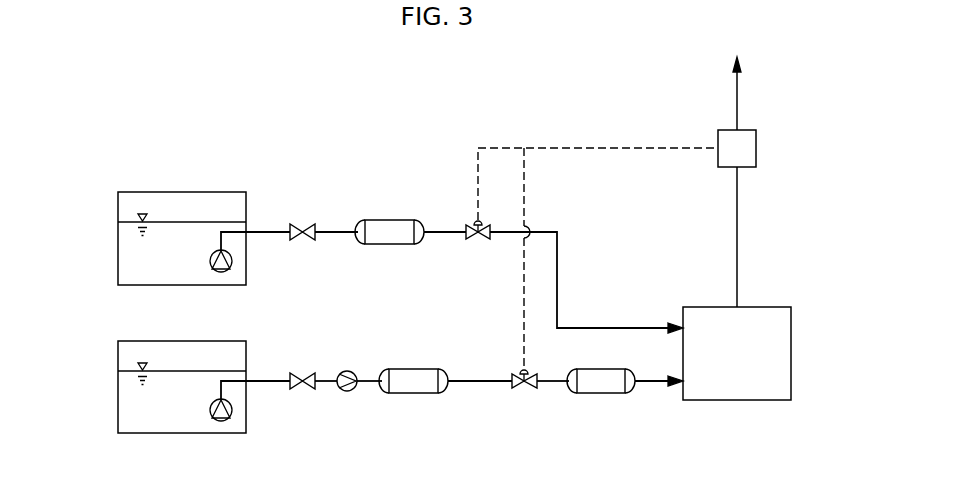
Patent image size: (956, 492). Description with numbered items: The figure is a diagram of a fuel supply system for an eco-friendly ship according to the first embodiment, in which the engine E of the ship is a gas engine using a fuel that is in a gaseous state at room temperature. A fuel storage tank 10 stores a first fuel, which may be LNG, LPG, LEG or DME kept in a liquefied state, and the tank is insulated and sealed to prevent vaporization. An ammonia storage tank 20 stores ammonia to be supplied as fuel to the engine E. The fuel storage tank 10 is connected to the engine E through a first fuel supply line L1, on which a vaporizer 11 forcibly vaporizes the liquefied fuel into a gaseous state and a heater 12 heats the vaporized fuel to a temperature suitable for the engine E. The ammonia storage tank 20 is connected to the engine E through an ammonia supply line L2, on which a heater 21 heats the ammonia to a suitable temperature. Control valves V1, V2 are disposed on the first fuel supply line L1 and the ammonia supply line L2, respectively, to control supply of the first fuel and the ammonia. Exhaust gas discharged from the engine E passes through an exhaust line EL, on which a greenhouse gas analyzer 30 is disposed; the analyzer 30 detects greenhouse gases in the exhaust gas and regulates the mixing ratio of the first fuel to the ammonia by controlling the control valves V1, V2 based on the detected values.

The fuel storage tank 10 is at (118, 388).
The ammonia storage tank 20 is at (118, 240).
The vaporizer 11 is at (412, 394).
The heater 12 is at (600, 394).
The heater 21 is at (388, 219).
The control valve V1 is at (525, 389).
The control valve V2 is at (480, 240).
The first fuel supply line L1 is at (650, 384).
The ammonia supply line L2 is at (557, 278).
The greenhouse gas analyzer 30 is at (756, 148).
The exhaust line EL is at (737, 102).
The engine E is at (737, 401).